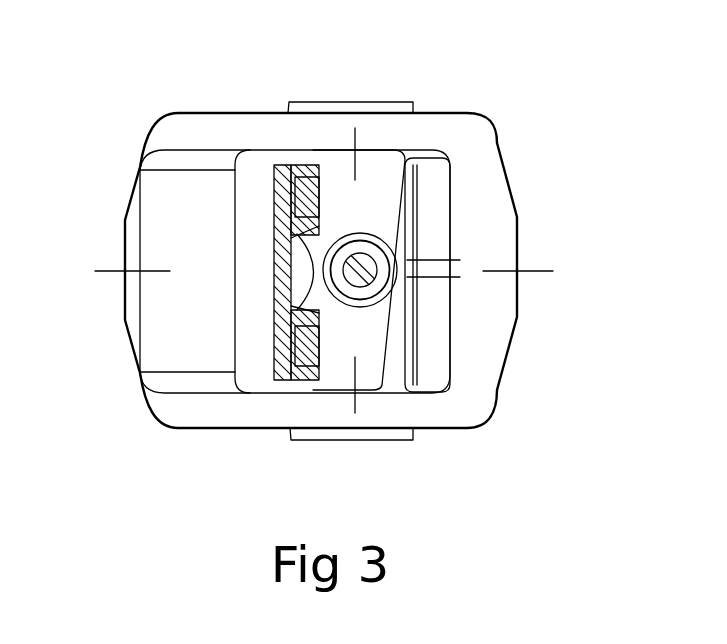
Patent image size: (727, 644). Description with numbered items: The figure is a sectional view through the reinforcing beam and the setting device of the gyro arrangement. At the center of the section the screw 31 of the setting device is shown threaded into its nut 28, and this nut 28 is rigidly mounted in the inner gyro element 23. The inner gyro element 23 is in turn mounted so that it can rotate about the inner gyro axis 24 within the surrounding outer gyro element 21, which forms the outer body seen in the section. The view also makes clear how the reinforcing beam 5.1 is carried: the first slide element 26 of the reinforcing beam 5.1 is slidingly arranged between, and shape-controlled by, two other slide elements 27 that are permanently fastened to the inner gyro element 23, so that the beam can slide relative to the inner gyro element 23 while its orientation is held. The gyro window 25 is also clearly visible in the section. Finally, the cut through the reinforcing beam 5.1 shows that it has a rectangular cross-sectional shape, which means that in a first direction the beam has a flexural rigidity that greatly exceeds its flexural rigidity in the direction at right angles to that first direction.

The outer gyro element 21 is at (208, 413).
The inner gyro element 23 is at (362, 188).
The inner gyro axis 24 is at (358, 403).
The gyro window 25 is at (253, 252).
The first slide element 26 is at (288, 178).
The slide elements 27 is at (311, 180).
The nut 28 is at (370, 247).
The screw 31 is at (367, 268).
The reinforcing beam 5.1 is at (283, 280).